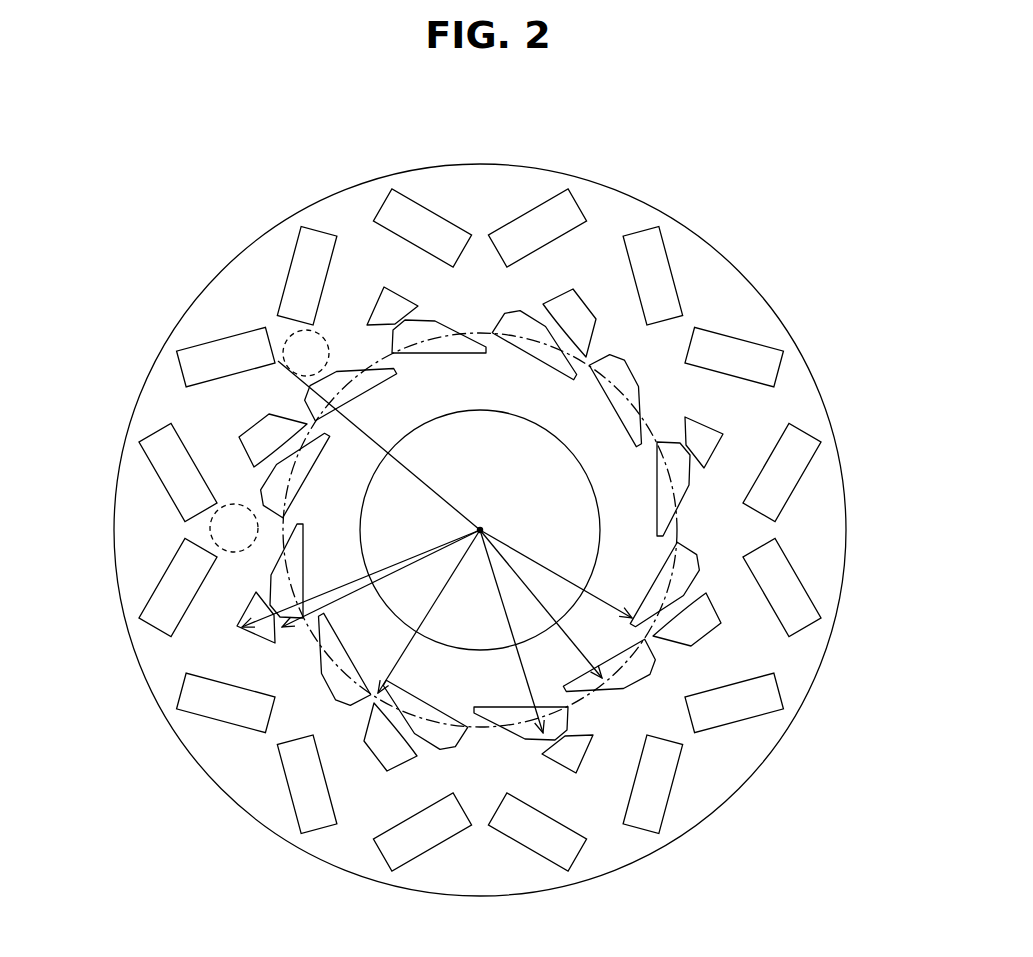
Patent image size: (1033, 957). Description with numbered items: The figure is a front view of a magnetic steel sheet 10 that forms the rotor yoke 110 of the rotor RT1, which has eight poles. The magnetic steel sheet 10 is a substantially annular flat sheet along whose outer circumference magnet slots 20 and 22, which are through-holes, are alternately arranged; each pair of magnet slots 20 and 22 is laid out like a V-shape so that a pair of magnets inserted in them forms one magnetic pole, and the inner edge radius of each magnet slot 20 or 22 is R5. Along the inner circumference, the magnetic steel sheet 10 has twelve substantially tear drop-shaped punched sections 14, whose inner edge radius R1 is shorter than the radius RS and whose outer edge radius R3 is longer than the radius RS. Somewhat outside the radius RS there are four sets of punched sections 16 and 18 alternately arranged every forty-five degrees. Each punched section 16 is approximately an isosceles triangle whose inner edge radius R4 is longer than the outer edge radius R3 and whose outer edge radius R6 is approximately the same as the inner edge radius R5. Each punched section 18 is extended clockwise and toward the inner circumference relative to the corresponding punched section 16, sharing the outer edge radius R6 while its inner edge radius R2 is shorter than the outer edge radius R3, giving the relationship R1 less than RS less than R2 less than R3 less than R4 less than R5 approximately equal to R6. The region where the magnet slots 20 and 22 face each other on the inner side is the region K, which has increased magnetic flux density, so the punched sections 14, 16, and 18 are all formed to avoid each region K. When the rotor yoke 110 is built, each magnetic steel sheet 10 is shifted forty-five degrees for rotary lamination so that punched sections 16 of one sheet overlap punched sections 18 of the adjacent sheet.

The magnetic steel sheet 10 is at (485, 178).
The punched section 14 is at (356, 520).
The punched section 16 is at (396, 312).
The punched section 18 is at (575, 315).
The magnet slot 20 is at (330, 264).
The magnet slot 22 is at (402, 235).
The region K is at (283, 345).
The rotor RT1 is at (480, 496).
The rotor yoke 110 is at (480, 496).
The inner edge radius R1 is at (495, 538).
The inner edge radius R2 is at (452, 583).
The outer edge radius R3 is at (522, 676).
The inner edge radius R4 is at (355, 592).
The inner edge radius R5 is at (437, 487).
The outer edge radius R6 is at (324, 594).
The radius RS is at (537, 602).